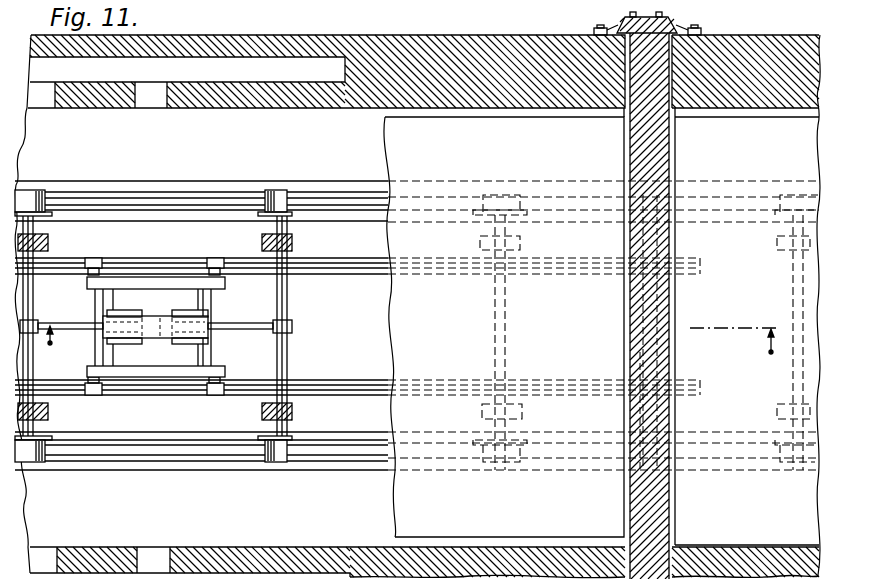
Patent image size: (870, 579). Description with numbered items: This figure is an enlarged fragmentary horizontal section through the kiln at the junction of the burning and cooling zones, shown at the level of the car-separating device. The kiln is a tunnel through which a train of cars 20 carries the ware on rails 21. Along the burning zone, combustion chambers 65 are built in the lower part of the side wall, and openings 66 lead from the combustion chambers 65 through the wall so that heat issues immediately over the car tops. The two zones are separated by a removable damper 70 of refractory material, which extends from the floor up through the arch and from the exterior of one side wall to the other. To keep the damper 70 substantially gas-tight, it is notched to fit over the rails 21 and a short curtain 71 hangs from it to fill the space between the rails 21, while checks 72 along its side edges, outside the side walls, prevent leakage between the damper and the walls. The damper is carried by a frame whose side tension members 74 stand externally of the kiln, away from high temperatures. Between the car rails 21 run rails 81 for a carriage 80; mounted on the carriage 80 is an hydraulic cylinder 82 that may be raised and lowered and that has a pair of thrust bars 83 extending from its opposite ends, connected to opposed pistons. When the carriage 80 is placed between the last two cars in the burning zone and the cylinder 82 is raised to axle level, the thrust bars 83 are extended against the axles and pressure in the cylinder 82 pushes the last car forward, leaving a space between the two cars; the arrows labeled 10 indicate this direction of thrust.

The direction of movement arrow 10 is at (413, 349).
The cars 20 is at (412, 0).
The rails 21 is at (203, 483).
The combustion chambers 65 is at (196, 63).
The openings 66 is at (38, 98).
The removable damper 70 is at (655, 296).
The short curtain 71 is at (670, 352).
The checks 72 is at (608, 21).
The side tension members 74 is at (652, 14).
The carriage 80 is at (157, 402).
The rails 81 is at (335, 387).
The hydraulic cylinder 82 is at (153, 318).
The thrust bars 83 is at (63, 324).